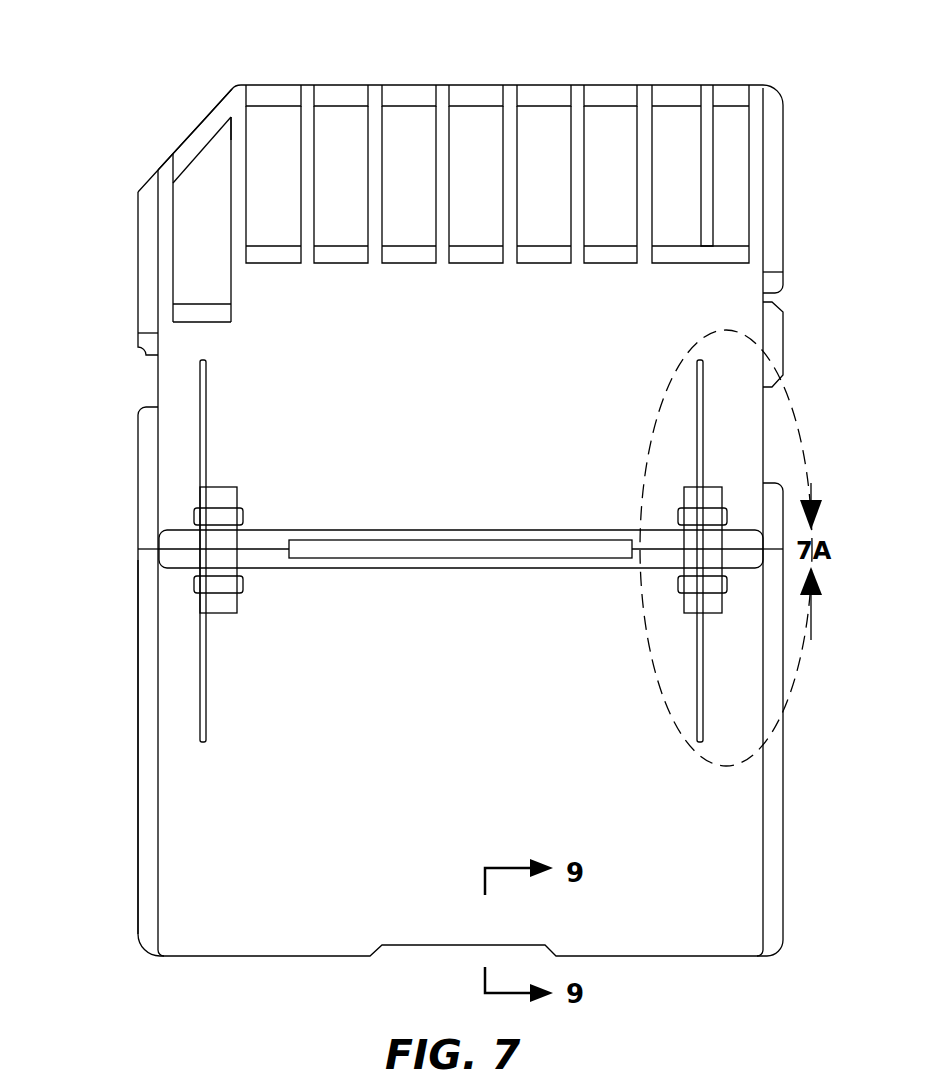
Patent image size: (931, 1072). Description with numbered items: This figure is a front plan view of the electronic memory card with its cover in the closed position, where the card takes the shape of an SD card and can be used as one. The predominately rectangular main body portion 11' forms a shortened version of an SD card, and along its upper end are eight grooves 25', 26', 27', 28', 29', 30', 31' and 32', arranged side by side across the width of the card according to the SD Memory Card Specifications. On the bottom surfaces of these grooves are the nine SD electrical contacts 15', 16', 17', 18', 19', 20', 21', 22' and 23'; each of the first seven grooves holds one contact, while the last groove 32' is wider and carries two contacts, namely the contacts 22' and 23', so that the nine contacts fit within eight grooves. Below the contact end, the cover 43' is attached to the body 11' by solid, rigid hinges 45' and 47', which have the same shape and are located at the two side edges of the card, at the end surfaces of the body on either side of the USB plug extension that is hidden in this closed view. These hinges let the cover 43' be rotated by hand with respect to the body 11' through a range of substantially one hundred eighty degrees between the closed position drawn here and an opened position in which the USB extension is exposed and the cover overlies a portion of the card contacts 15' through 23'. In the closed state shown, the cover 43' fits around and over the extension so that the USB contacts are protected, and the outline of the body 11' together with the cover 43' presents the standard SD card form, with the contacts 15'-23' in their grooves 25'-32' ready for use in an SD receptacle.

The main body portion 11' is at (414, 520).
The electrical contact 15' is at (172, 152).
The electrical contact 16' is at (208, 105).
The electrical contact 17' is at (289, 156).
The electrical contact 18' is at (359, 155).
The electrical contact 19' is at (425, 155).
The electrical contact 20' is at (493, 155).
The electrical contact 21' is at (563, 155).
The electrical contact 22' is at (666, 155).
The electrical contact 23' is at (766, 83).
The groove 25' is at (165, 132).
The groove 26' is at (222, 81).
The groove 27' is at (295, 66).
The groove 28' is at (363, 62).
The groove 29' is at (431, 62).
The groove 30' is at (498, 61).
The groove 31' is at (568, 61).
The groove 32' is at (650, 131).
The cover 43' is at (91, 747).
The hinge 45' is at (161, 551).
The hinge 47' is at (777, 551).